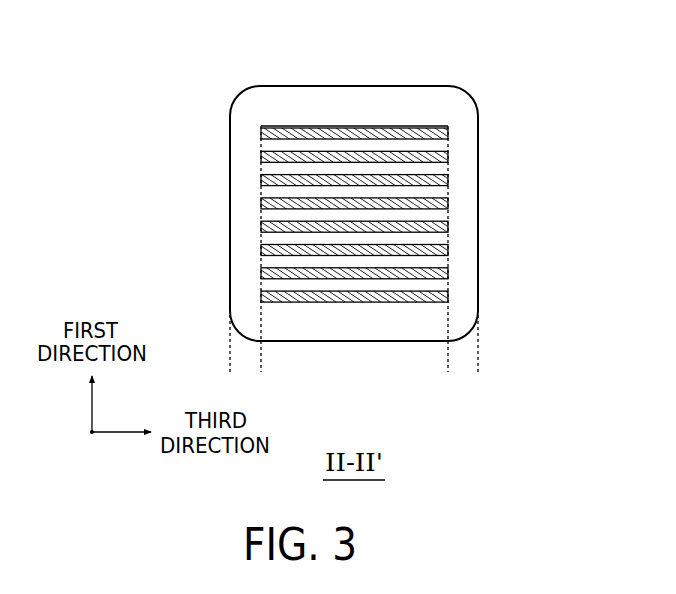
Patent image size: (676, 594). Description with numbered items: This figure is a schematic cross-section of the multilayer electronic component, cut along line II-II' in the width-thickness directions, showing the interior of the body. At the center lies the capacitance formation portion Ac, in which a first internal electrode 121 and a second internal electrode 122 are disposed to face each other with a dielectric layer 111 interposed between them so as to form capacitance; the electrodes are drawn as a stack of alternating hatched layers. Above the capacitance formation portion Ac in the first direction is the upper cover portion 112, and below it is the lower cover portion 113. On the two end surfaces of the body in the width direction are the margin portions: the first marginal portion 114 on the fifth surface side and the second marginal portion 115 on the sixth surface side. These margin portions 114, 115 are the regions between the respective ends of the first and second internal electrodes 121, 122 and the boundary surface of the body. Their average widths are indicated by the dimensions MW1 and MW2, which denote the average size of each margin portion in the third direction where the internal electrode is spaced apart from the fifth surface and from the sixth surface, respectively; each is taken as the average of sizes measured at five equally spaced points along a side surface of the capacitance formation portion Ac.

The dielectric layer 111 is at (437, 144).
The upper cover portion 112 is at (348, 96).
The lower cover portion 113 is at (352, 330).
The first marginal portion 114 is at (240, 247).
The second marginal portion 115 is at (472, 243).
The first internal electrode 121 is at (437, 128).
The second internal electrode 122 is at (445, 156).
The capacitance formation portion Ac is at (261, 215).
The average size of the margin portion in the third direction on the fifth-surface s MW1 is at (260, 363).
The average size of the margin portion in the third direction on the sixth-surface s MW2 is at (477, 363).